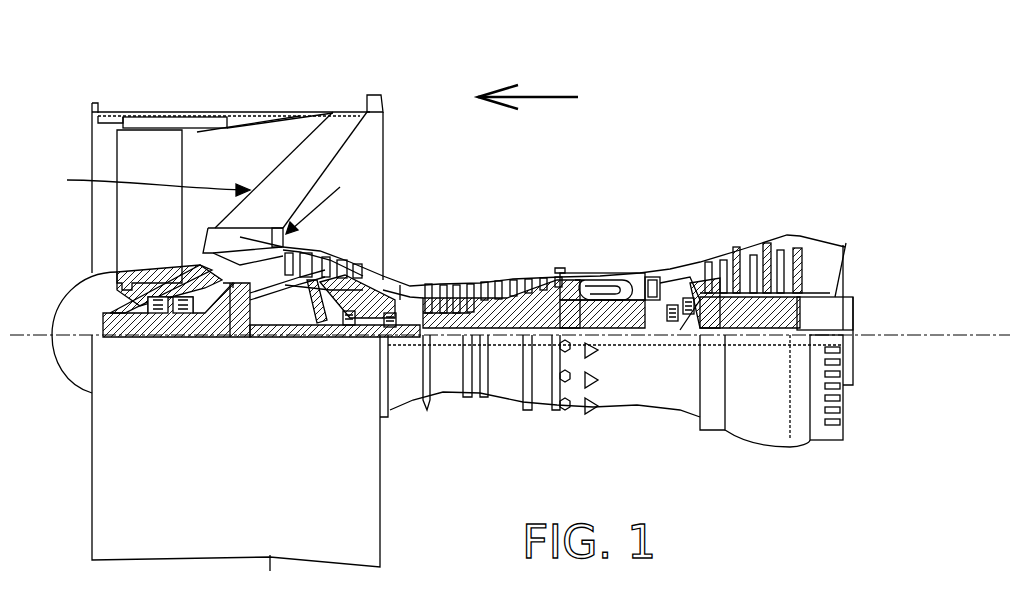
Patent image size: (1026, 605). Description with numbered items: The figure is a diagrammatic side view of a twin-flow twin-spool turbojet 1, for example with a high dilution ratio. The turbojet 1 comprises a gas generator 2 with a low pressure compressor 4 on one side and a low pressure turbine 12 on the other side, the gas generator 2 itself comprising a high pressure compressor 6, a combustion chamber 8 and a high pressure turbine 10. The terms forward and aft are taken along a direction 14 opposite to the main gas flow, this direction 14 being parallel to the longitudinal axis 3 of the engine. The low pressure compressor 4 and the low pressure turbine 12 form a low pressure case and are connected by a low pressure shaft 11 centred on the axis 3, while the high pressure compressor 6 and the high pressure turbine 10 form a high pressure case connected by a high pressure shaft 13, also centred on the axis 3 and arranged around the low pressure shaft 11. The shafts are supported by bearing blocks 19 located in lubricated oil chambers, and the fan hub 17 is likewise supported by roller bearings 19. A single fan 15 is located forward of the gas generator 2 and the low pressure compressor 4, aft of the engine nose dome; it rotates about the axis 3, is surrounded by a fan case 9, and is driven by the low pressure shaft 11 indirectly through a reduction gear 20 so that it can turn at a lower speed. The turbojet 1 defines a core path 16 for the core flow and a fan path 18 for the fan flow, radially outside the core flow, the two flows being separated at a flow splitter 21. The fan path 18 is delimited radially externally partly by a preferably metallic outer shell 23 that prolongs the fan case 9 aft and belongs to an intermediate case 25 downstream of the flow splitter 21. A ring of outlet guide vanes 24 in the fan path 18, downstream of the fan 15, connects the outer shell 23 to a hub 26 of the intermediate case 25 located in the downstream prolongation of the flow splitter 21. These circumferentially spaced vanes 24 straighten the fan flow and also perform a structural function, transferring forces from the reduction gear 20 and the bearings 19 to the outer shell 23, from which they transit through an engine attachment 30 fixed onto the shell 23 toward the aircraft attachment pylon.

The turbojet 1 is at (562, 196).
The gas generator 2 is at (480, 430).
The longitudinal axis 3 is at (27, 337).
The low pressure compressor 4 is at (300, 258).
The high pressure compressor 6 is at (513, 320).
The combustion chamber 8 is at (588, 275).
The fan case 9 is at (200, 118).
The high pressure turbine 10 is at (653, 283).
The low pressure shaft 11 is at (398, 335).
The low pressure turbine 12 is at (750, 257).
The high pressure shaft 13 is at (650, 330).
The direction 14 is at (555, 97).
The fan 15 is at (147, 145).
The core path 16 is at (410, 287).
The fan hub 17 is at (152, 313).
The fan path 18 is at (246, 172).
The bearing blocks 19 is at (190, 313).
The reduction gear 20 is at (241, 330).
The flow splitter 21 is at (213, 232).
The outer shell 23 is at (300, 112).
The outlet guide vanes 24 is at (332, 157).
The intermediate case 25 is at (142, 181).
The hub 26 is at (330, 193).
The engine attachment 30 is at (383, 100).